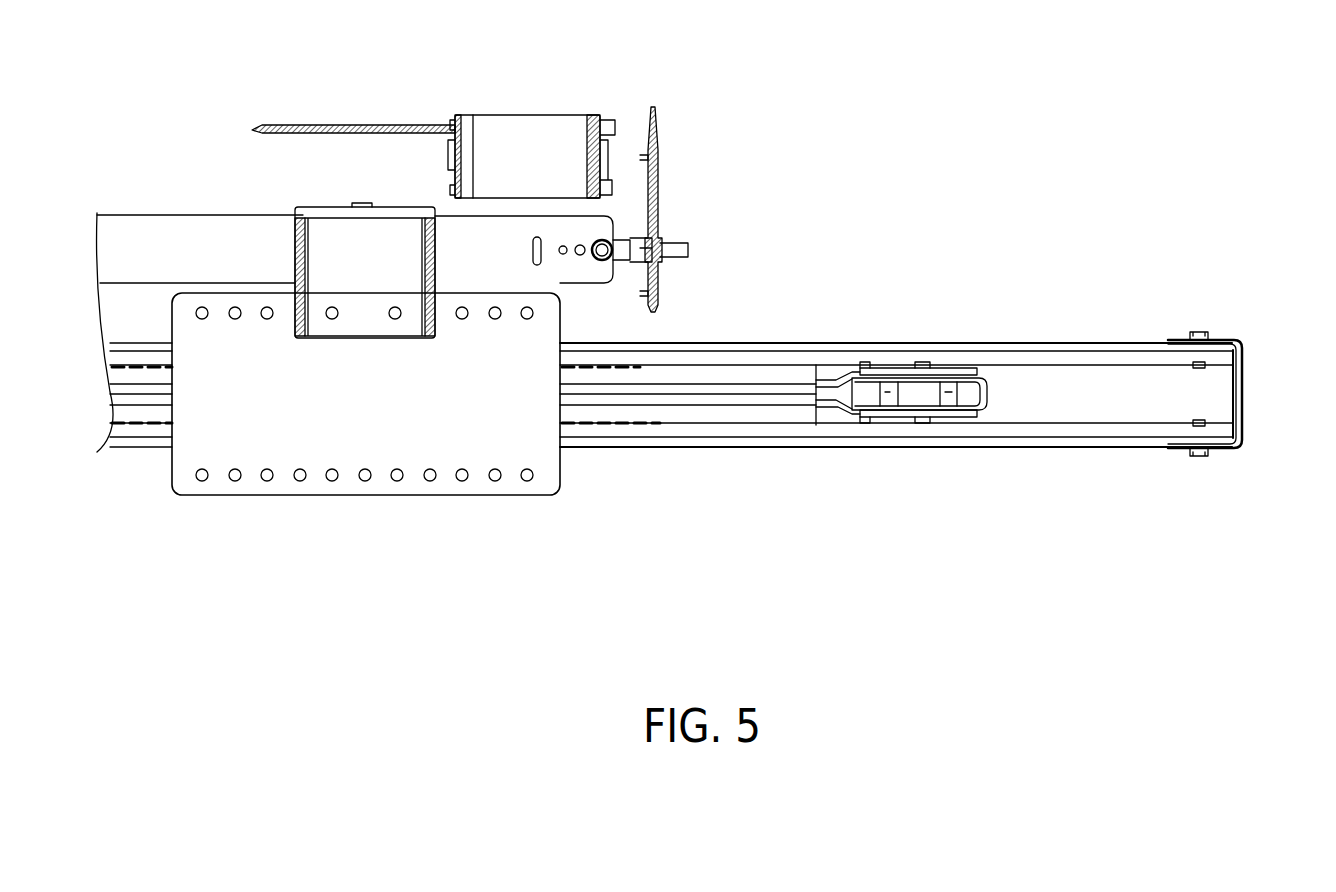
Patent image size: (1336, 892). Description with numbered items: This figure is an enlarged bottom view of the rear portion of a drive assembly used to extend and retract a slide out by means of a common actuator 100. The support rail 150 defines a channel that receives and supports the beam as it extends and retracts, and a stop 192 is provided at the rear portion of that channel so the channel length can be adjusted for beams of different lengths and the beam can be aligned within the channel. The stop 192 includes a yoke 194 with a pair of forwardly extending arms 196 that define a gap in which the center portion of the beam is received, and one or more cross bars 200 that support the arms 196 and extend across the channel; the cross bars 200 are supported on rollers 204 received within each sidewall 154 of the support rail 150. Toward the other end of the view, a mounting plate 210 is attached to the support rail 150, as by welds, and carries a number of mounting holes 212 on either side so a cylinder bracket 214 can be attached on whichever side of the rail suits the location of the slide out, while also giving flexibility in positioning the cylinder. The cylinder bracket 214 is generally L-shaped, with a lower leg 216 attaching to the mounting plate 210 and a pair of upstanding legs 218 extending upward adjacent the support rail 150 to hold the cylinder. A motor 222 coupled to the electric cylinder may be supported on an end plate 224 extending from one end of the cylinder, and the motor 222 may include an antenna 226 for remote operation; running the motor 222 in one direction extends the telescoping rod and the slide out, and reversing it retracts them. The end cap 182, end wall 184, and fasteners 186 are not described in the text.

The actuator 100 is at (410, 72).
The support rail 150 is at (737, 342).
The sidewall 154 is at (1047, 337).
The end cap 182 is at (1243, 345).
The end wall 184 is at (1247, 378).
The fastener 186 is at (1188, 333).
The stop 192 is at (871, 369).
The yoke 194 is at (825, 418).
The arms 196 is at (837, 425).
The cross bars 200 is at (922, 420).
The rollers 204 is at (918, 357).
The mounting plate 210 is at (333, 397).
The mounting holes 212 is at (267, 306).
The cylinder bracket 214 is at (318, 230).
The lower leg 216 is at (353, 292).
The upstanding legs 218 is at (377, 205).
The motor 222 is at (509, 167).
The end plate 224 is at (660, 192).
The antenna 226 is at (318, 124).